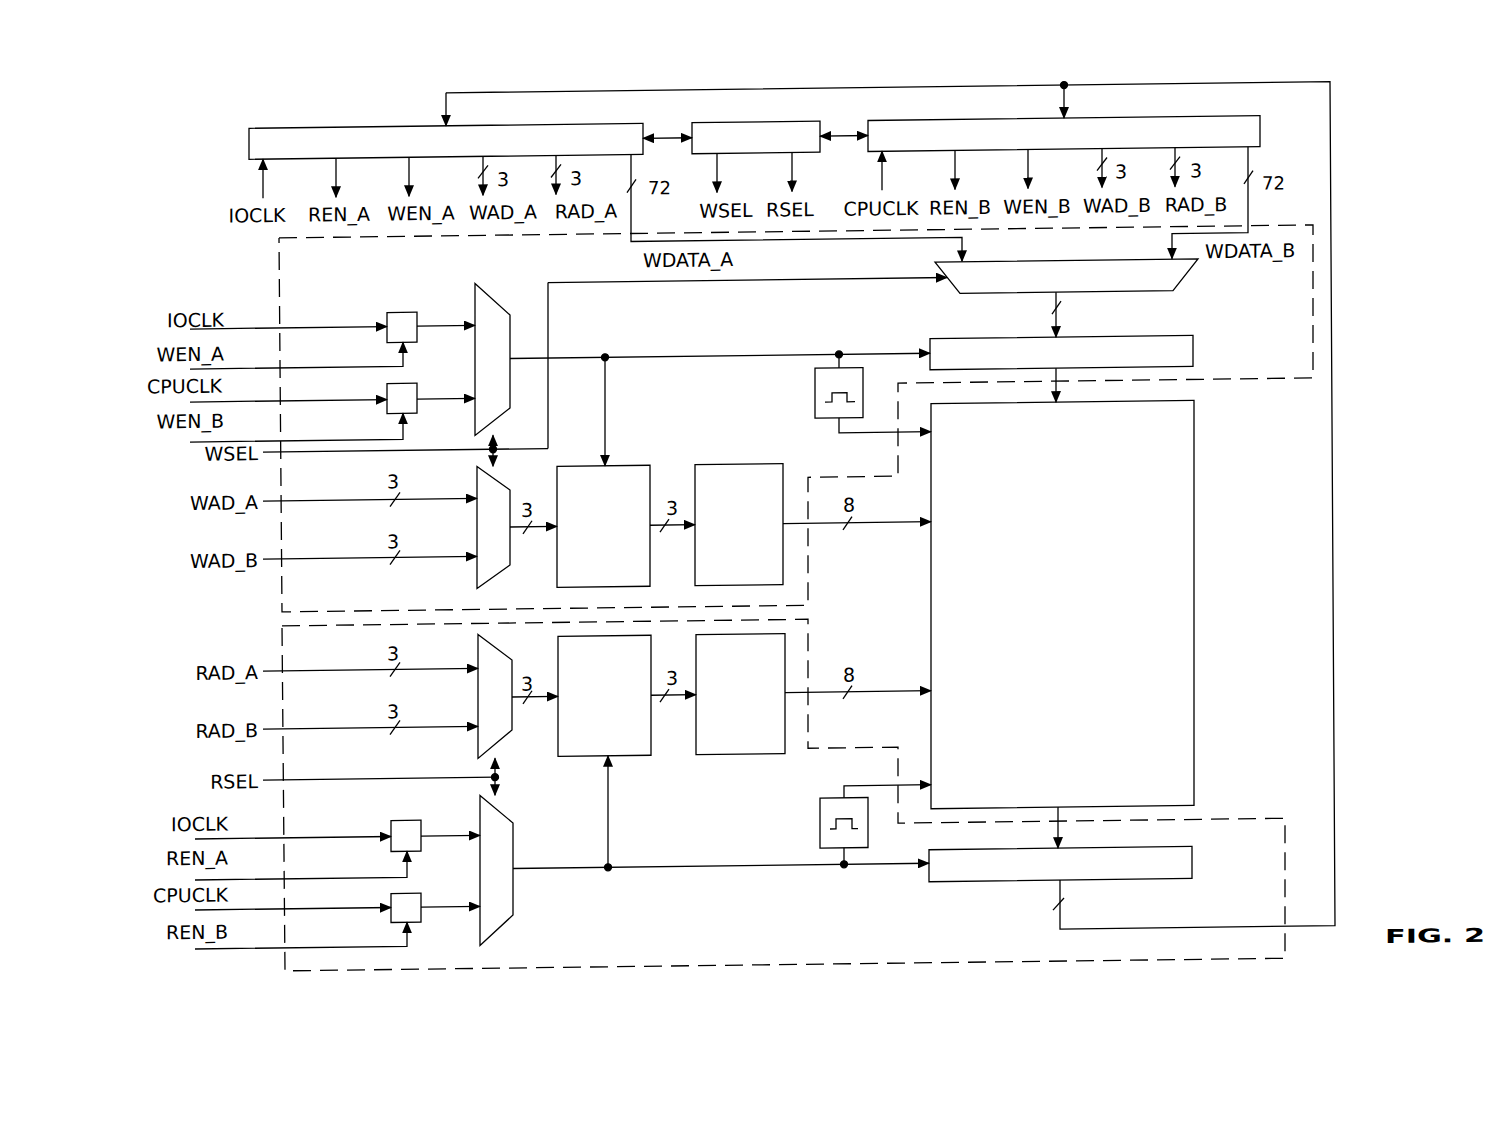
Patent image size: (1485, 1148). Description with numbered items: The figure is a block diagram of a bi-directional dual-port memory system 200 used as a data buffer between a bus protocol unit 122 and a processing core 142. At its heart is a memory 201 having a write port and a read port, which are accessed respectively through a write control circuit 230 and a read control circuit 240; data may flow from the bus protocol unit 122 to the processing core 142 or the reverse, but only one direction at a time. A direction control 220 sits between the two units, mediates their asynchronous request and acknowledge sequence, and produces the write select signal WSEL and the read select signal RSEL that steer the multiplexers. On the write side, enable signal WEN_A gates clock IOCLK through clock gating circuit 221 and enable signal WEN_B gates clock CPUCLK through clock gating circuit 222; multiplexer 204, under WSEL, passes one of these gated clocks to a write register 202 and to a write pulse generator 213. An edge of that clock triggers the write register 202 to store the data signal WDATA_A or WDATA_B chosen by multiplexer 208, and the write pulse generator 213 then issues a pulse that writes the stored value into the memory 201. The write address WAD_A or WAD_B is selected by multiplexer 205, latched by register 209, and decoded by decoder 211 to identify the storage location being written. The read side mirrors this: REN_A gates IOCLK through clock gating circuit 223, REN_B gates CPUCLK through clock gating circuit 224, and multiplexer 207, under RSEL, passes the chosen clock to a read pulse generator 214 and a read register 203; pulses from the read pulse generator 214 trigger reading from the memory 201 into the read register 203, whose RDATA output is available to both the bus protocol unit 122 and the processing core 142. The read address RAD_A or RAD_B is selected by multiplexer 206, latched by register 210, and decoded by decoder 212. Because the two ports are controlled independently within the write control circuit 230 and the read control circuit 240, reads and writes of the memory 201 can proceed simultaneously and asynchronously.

The bus protocol unit 122 is at (434, 122).
The processing core 142 is at (1084, 120).
The bi-directional dual-port memory system 200 is at (1360, 318).
The memory 201 is at (1086, 604).
The write register 202 is at (1095, 369).
The read register 203 is at (1093, 847).
The multiplexer 204 is at (469, 351).
The multiplexer 205 is at (465, 533).
The multiplexer 206 is at (516, 711).
The multiplexer 207 is at (523, 871).
The multiplexer 208 is at (1094, 298).
The register 209 is at (608, 507).
The register 210 is at (613, 719).
The decoder 211 is at (739, 507).
The decoder 212 is at (740, 718).
The write pulse generator 213 is at (844, 393).
The read pulse generator 214 is at (852, 825).
The direction control 220 is at (737, 122).
The clock gating circuit 221 is at (389, 305).
The clock gating circuit 222 is at (424, 415).
The clock gating circuit 223 is at (427, 824).
The clock gating circuit 224 is at (434, 924).
The write control circuit 230 is at (798, 418).
The read control circuit 240 is at (783, 792).